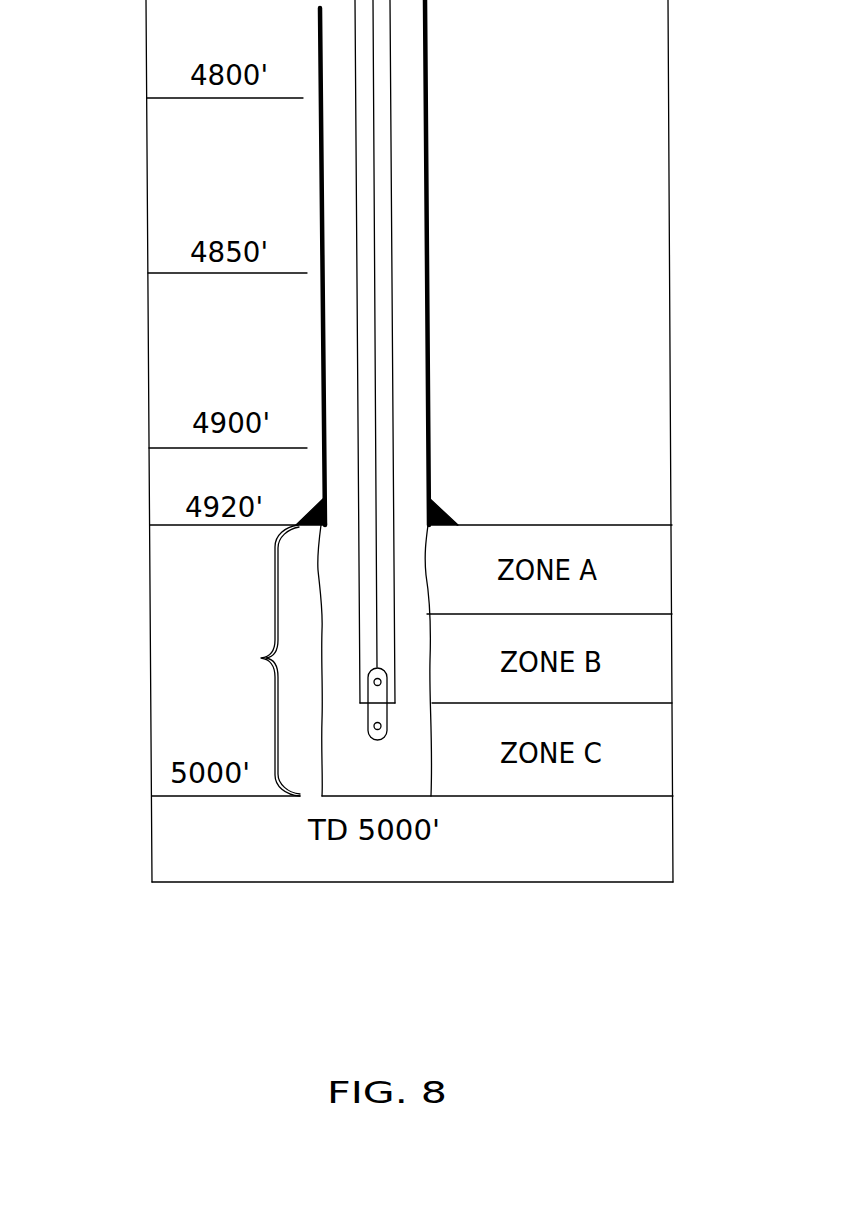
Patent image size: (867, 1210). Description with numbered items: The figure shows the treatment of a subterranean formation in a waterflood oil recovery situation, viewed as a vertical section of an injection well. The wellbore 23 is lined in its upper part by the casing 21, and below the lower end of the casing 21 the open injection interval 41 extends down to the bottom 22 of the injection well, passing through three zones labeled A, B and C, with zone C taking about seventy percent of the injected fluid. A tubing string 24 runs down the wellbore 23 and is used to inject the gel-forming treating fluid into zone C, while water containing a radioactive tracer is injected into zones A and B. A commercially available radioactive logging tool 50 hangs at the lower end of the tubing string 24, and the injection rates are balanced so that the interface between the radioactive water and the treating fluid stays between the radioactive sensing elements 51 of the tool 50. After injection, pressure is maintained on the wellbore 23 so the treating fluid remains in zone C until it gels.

The casing 21 is at (428, 472).
The bottom of the injection well 22 is at (413, 796).
The wellbore 23 is at (318, 568).
The tubing string 24 is at (393, 344).
The injection interval 41 is at (261, 658).
The radioactive logging tool 50 is at (374, 740).
The radioactive sensing elements 51 is at (368, 682).